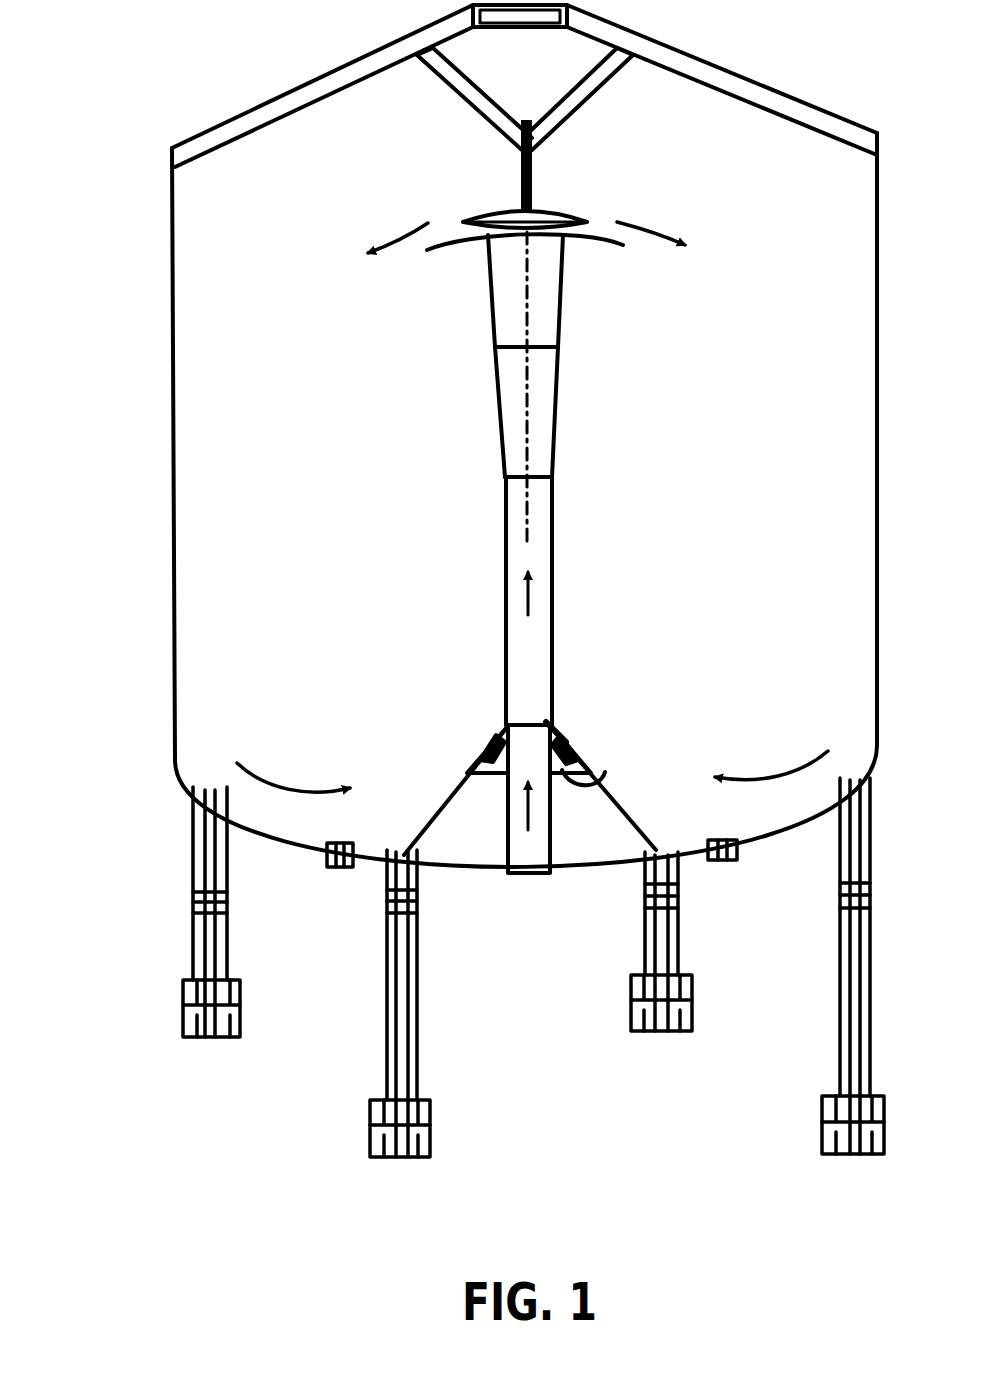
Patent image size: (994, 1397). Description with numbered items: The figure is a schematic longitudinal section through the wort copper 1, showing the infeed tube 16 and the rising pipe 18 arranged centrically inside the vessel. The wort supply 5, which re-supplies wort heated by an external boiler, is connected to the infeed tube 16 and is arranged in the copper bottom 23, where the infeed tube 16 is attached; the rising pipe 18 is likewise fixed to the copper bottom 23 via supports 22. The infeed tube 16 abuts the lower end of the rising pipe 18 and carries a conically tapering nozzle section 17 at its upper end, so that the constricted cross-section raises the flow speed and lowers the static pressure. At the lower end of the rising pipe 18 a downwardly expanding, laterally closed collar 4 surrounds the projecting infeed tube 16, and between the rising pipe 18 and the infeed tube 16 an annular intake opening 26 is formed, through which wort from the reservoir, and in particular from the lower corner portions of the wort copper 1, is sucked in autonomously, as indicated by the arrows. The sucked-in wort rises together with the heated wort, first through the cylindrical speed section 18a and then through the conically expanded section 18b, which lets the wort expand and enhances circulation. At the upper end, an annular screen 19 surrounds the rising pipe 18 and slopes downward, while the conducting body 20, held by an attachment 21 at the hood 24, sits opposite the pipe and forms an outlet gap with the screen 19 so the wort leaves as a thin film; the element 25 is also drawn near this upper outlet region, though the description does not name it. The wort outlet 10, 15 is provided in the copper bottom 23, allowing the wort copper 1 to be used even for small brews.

The wort copper 1 is at (118, 146).
The hood 24 is at (308, 82).
The attachment 21 is at (470, 124).
The conducting body 20 is at (550, 212).
The outlet opening 25 is at (548, 235).
The annular screen 19 is at (623, 248).
The rising pipe 18 is at (531, 478).
The cylindrical section 18a is at (504, 585).
The conically expanded section 18b is at (498, 425).
The intake opening 26 is at (560, 722).
The collar 4 is at (578, 757).
The supports 22 is at (478, 773).
The infeed tube 16 is at (507, 822).
The conically tapering nozzle section 17 is at (577, 773).
The wort supply 5 is at (540, 878).
The copper bottom 23 is at (240, 806).
The wort outlet 10 is at (330, 867).
The wort outlet 15 is at (725, 860).